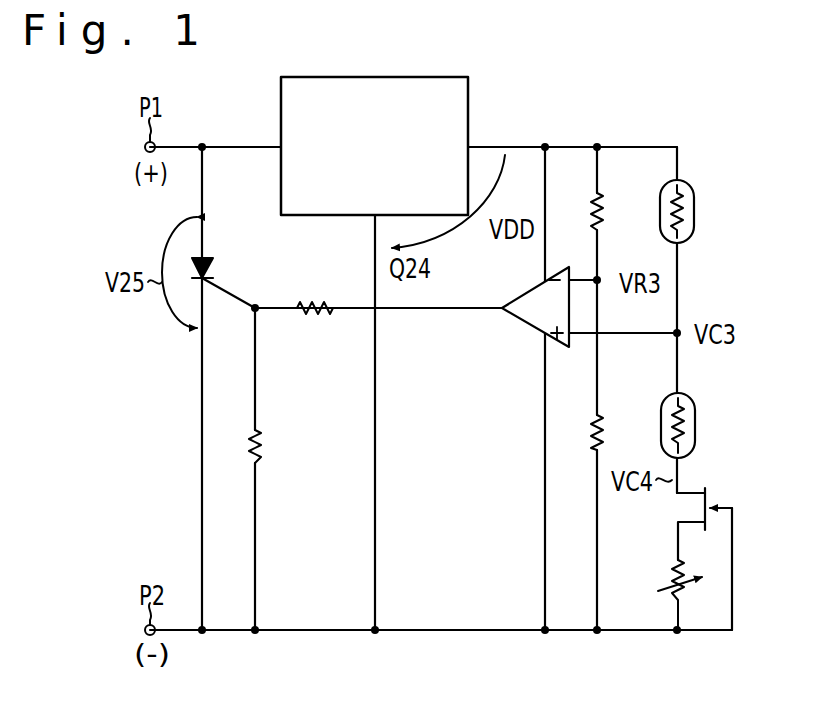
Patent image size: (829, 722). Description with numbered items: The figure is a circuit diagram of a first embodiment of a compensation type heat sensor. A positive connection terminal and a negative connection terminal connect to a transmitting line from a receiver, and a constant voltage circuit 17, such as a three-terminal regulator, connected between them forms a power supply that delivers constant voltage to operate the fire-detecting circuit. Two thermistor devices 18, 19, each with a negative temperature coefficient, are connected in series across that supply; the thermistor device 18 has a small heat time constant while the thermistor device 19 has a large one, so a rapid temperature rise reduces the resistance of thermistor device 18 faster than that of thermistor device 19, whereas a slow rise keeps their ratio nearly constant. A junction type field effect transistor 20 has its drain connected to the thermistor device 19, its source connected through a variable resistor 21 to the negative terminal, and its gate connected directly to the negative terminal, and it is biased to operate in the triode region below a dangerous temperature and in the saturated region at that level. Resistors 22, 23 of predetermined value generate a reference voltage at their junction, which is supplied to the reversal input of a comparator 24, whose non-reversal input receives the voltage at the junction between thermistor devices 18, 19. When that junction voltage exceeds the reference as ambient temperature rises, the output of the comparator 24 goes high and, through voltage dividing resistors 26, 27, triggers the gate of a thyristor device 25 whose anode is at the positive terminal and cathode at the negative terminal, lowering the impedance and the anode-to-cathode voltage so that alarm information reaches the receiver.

The constant voltage circuit 17 is at (377, 76).
The thermistor device 18 is at (698, 216).
The thermistor device 19 is at (700, 430).
The junction type field effect transistor 20 is at (713, 494).
The variable resistor 21 is at (668, 579).
The resistor 22 is at (606, 203).
The resistor 23 is at (606, 423).
The comparator 24 is at (523, 291).
The thyristor device 25 is at (212, 262).
The voltage dividing resistor 26 is at (307, 299).
The voltage dividing resistor 27 is at (272, 450).